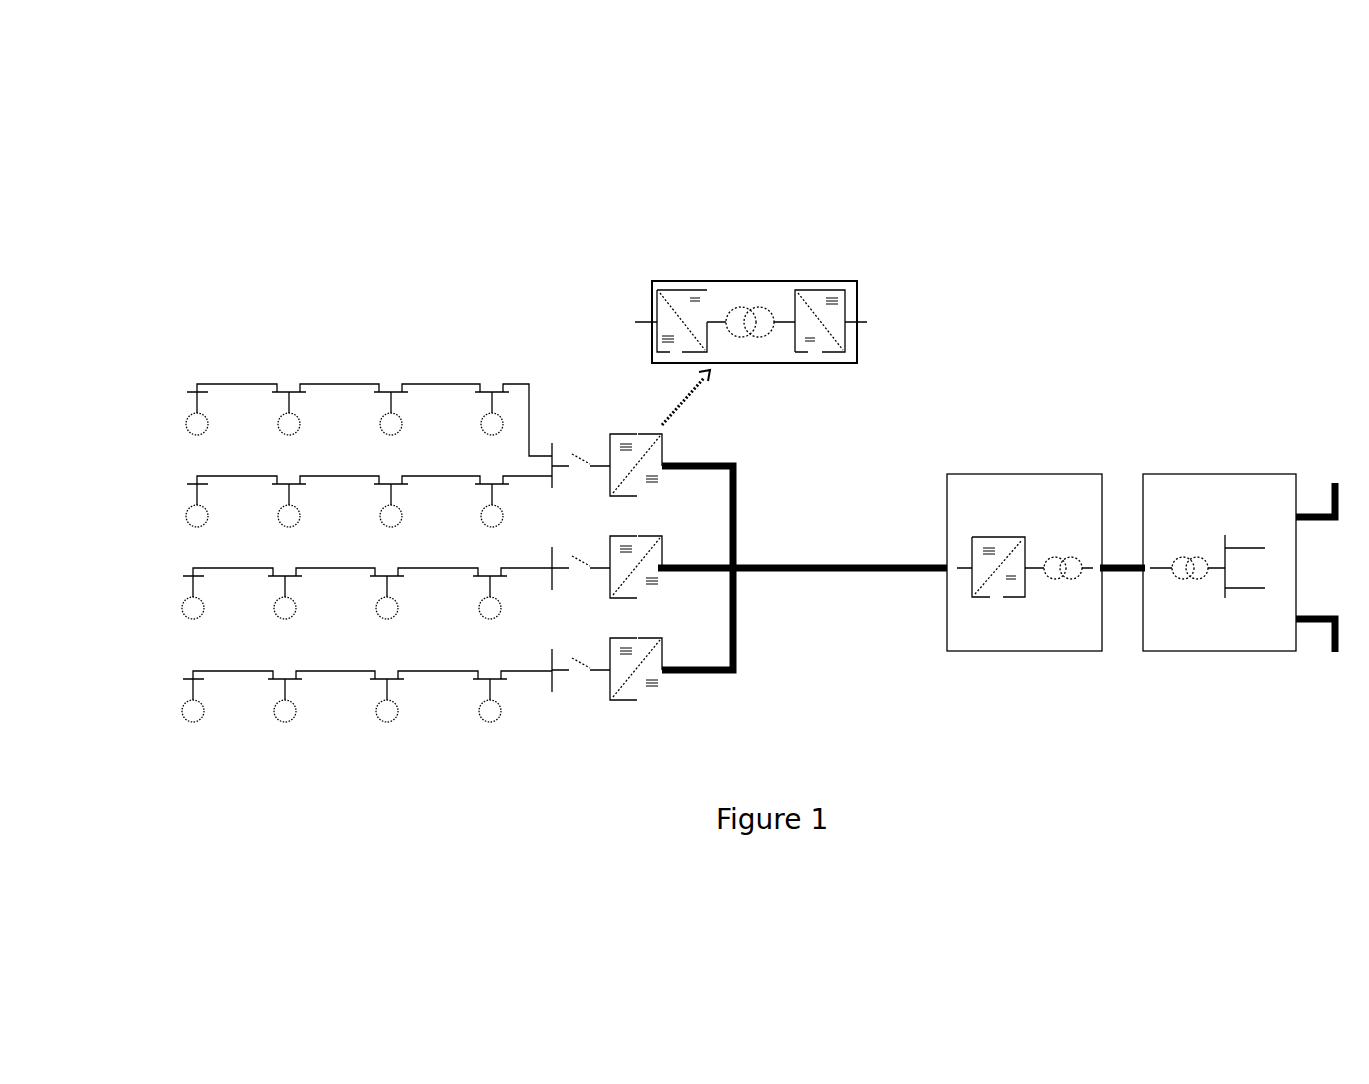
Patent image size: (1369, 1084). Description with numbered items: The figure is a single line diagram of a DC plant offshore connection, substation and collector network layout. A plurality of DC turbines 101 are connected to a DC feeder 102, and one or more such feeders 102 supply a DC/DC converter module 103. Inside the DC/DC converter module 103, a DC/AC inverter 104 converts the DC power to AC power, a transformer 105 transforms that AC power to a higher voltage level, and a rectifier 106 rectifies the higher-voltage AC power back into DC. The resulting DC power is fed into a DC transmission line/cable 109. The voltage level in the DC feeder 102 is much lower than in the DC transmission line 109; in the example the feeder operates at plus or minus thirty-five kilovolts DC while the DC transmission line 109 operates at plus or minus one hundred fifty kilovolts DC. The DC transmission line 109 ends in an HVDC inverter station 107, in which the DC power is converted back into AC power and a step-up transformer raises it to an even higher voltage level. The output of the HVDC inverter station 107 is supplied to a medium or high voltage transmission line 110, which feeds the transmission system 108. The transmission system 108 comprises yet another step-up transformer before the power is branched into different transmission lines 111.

The DC turbines 101 is at (178, 423).
The DC feeder 102 is at (518, 376).
The DC/DC converter module 103 is at (797, 435).
The DC/AC inverter 104 is at (686, 276).
The transformer 105 is at (752, 291).
The rectifier 106 is at (826, 276).
The HVDC inverter station 107 is at (1028, 466).
The transmission system 108 is at (1222, 468).
The DC transmission line/cable 109 is at (870, 556).
The medium or high voltage transmission line 110 is at (1120, 489).
The transmission lines 111 is at (1320, 494).